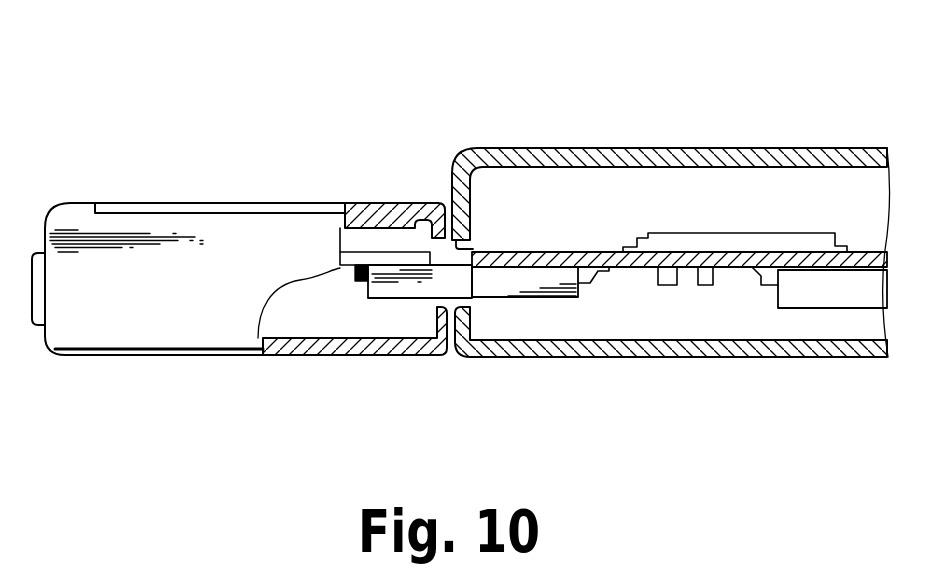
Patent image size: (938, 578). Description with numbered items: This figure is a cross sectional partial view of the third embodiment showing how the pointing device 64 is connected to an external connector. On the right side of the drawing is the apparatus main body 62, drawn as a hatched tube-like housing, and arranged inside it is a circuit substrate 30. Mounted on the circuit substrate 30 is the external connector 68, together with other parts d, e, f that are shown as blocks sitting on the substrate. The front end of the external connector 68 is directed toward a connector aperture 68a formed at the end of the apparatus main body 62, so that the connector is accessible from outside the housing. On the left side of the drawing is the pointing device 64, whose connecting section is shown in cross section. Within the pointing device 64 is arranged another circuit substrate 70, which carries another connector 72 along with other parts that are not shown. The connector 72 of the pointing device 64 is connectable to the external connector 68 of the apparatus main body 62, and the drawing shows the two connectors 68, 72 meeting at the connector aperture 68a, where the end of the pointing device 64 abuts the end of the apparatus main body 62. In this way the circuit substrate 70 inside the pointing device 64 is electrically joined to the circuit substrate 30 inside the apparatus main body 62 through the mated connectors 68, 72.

The apparatus main body 62 is at (699, 148).
The pointing device 64 is at (136, 357).
The external connector 68 is at (540, 277).
The connector aperture 68a is at (462, 250).
The circuit substrate 70 is at (363, 264).
The connector 72 is at (414, 283).
The circuit substrate 30 is at (642, 268).
The part d is at (705, 287).
The part e is at (798, 309).
The part f is at (768, 245).